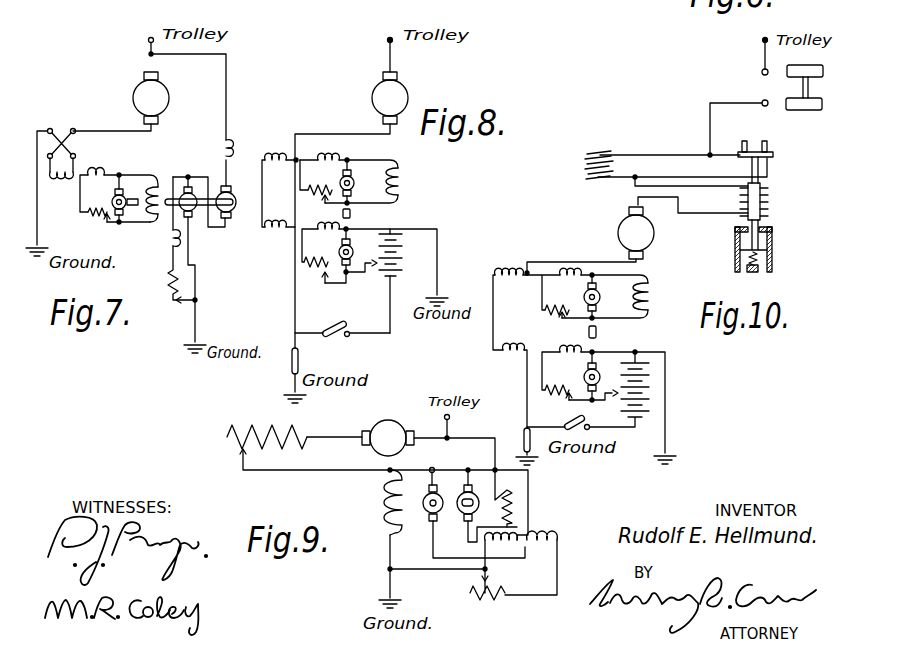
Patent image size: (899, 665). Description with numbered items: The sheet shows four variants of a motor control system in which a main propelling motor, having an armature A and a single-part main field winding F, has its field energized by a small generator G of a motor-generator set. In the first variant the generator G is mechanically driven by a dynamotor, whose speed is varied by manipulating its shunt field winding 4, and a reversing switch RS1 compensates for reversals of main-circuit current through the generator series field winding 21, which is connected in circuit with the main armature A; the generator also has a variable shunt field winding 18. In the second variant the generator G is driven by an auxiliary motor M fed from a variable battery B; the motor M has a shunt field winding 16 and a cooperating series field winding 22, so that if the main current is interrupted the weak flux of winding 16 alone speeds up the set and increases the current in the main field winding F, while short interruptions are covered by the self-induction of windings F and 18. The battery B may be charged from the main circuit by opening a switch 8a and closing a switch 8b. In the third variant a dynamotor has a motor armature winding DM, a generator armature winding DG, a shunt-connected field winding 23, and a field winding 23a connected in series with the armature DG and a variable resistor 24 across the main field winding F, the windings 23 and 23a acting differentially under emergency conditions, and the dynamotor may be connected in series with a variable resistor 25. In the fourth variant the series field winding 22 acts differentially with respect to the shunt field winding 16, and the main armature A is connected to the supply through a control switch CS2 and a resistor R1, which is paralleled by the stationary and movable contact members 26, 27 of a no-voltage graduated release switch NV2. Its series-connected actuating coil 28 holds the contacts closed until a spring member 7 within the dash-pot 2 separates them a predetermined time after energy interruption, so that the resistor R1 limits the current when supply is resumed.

In FIG. 10, the dash-pot 2 is at (773, 242).
In FIG. 7, the shunt field winding 4 is at (168, 239).
In FIG. 10, the spring member 7 is at (762, 262).
In FIG. 8, the switch 8a is at (299, 360).
In FIG. 10, the switch 8a is at (523, 433).
In FIG. 8, the switch 8b is at (346, 326).
In FIG. 10, the switch 8b is at (571, 421).
In FIG. 8, the shunt field winding 16 is at (332, 233).
In FIG. 10, the shunt field winding 16 is at (571, 340).
In FIG. 7, the shunt field winding 18 is at (93, 172).
In FIG. 8, the shunt field winding 18 is at (320, 160).
In FIG. 7, the series field winding 21 is at (65, 178).
In FIG. 8, the series field winding 21 is at (285, 157).
In FIG. 10, the series field winding 21 is at (520, 281).
In FIG. 8, the series field winding 22 is at (284, 230).
In FIG. 10, the series field winding 22 is at (515, 336).
In FIG. 9, the shunt-connected field winding 23 is at (500, 548).
In FIG. 9, the field winding 23a is at (547, 528).
In FIG. 9, the variable resistor 24 is at (484, 600).
In FIG. 9, the variable resistor 25 is at (520, 506).
In FIG. 10, the stationary contact member 26 is at (764, 143).
In FIG. 10, the movable contact member 27 is at (773, 157).
In FIG. 10, the actuating coil 28 is at (745, 200).
In FIG. 7, the armature A is at (151, 98).
In FIG. 8, the armature A is at (390, 98).
In FIG. 9, the armature A is at (388, 438).
In FIG. 10, the armature A is at (636, 233).
In FIG. 8, the battery B is at (402, 252).
In FIG. 10, the control switch CS2 is at (814, 87).
In FIG. 7, the generator armature winding DG is at (193, 190).
In FIG. 9, the generator armature winding DG is at (438, 498).
In FIG. 7, the motor armature winding DM is at (238, 189).
In FIG. 9, the motor armature winding DM is at (477, 495).
In FIG. 7, the main field winding F is at (155, 180).
In FIG. 8, the main field winding F is at (399, 181).
In FIG. 9, the main field winding F is at (380, 500).
In FIG. 10, the main field winding F is at (645, 300).
In FIG. 7, the generator G is at (125, 198).
In FIG. 8, the generator G is at (354, 181).
In FIG. 10, the generator G is at (598, 297).
In FIG. 8, the motor M is at (350, 251).
In FIG. 10, the motor M is at (598, 376).
In FIG. 10, the no-voltage graduated release switch NV2 is at (778, 201).
In FIG. 9, the resistor R1 is at (267, 446).
In FIG. 10, the resistor R1 is at (613, 166).
In FIG. 7, the reversing switch RS1 is at (67, 130).